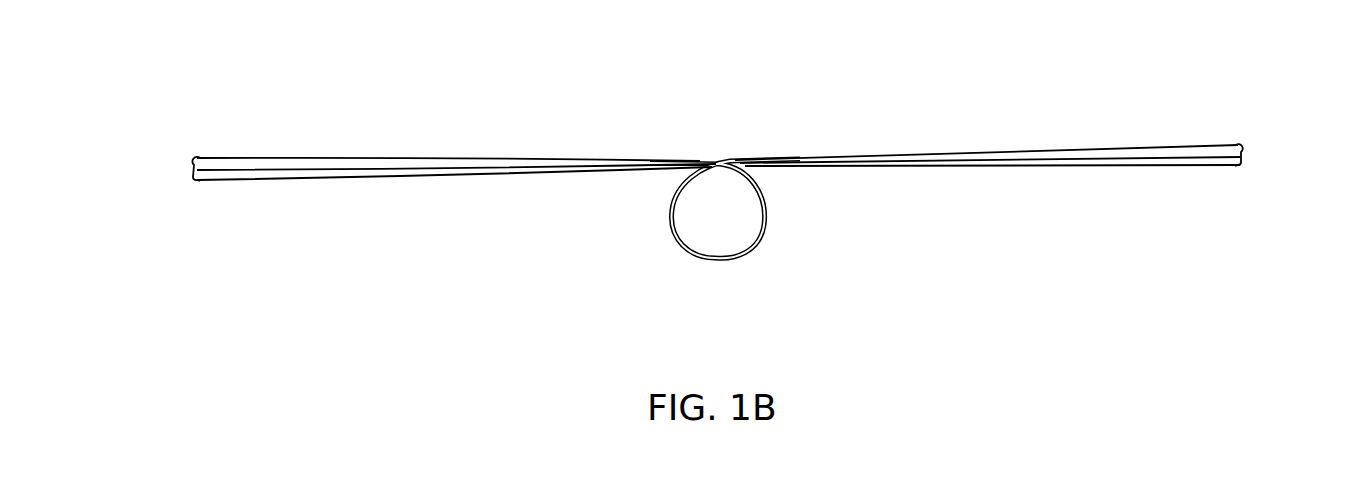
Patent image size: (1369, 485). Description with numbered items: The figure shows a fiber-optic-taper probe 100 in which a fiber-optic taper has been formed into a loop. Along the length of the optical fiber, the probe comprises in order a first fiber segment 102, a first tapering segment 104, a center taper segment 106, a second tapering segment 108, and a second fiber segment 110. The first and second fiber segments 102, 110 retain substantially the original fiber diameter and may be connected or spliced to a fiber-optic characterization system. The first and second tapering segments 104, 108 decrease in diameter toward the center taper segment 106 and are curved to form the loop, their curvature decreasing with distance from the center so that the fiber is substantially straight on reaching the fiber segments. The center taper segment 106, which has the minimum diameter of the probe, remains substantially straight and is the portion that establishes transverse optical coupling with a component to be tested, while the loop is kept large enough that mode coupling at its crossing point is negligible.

The fiber-optic-taper probe 100 is at (937, 262).
The first fiber segment 102 is at (259, 168).
The first tapering segment 104 is at (425, 162).
The center taper segment 106 is at (720, 258).
The second tapering segment 108 is at (1022, 162).
The second fiber segment 110 is at (1196, 157).